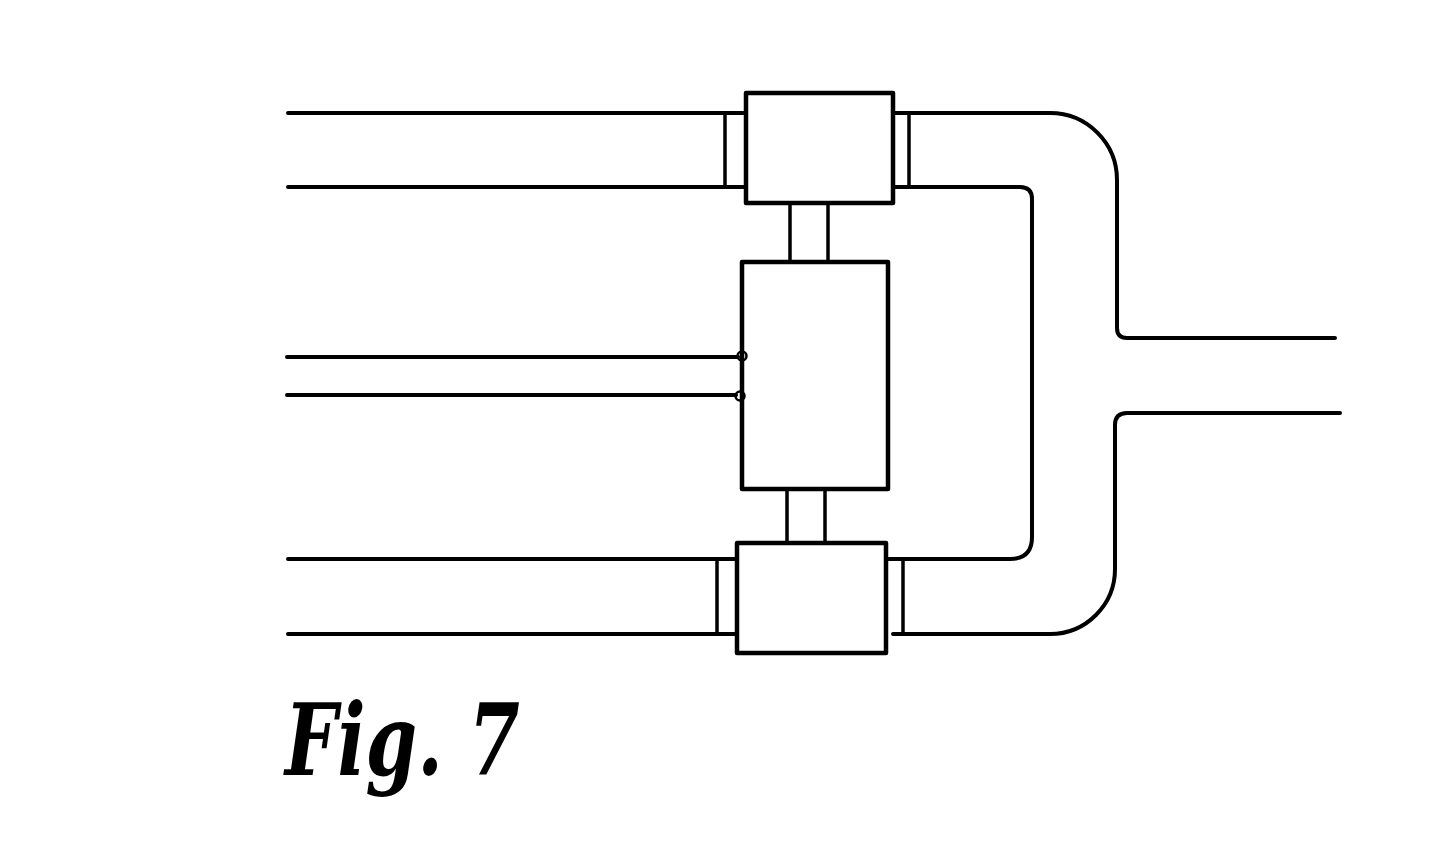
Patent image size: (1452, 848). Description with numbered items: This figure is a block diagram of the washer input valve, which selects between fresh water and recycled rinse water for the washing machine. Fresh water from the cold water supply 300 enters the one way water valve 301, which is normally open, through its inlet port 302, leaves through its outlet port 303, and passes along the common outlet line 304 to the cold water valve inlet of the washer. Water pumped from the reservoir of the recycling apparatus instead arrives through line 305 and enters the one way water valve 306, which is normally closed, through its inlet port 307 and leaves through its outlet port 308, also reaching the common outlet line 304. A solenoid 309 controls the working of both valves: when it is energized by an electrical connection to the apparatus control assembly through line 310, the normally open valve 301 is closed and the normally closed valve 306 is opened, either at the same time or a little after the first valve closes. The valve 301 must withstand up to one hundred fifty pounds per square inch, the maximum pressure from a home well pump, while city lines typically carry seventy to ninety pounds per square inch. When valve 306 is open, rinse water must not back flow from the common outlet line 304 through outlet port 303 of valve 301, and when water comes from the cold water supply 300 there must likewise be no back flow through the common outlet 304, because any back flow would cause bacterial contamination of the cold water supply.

The cold water supply 300 is at (280, 602).
The one way water valve 301 is at (800, 655).
The inlet port 302 is at (727, 607).
The outlet port 303 is at (892, 607).
The common outlet line 304 is at (1332, 383).
The line 305 is at (280, 148).
The one way water valve 306 is at (838, 110).
The inlet port 307 is at (733, 118).
The outlet port 308 is at (899, 136).
The solenoid 309 is at (867, 380).
The line 310 is at (282, 374).